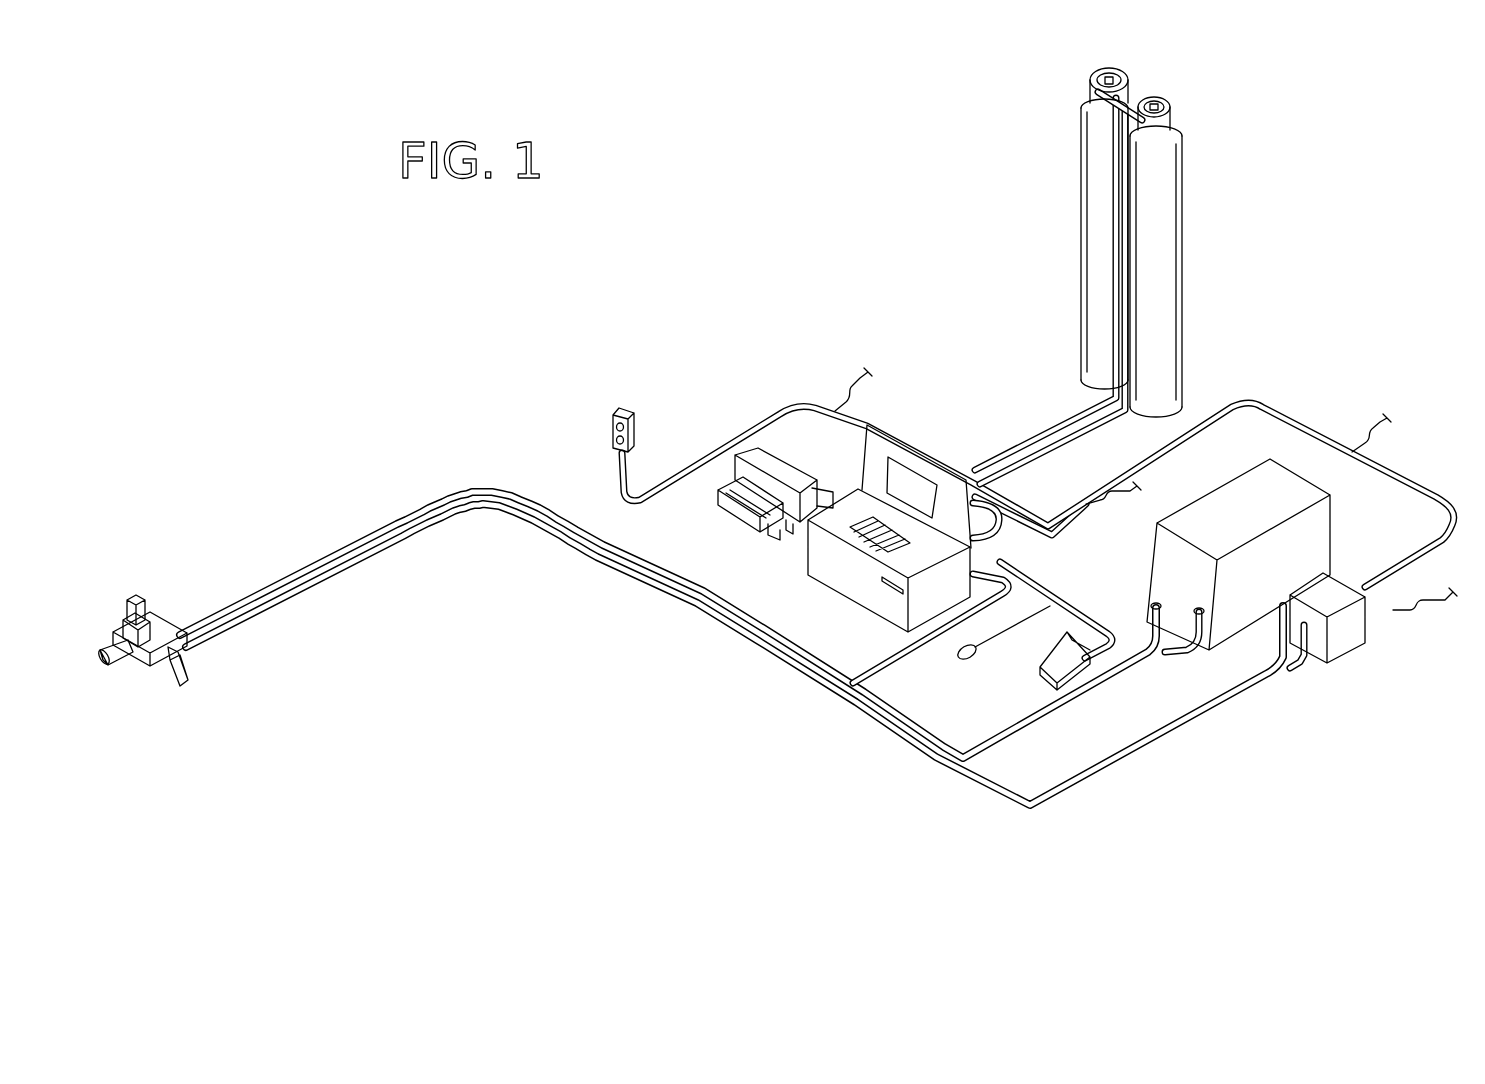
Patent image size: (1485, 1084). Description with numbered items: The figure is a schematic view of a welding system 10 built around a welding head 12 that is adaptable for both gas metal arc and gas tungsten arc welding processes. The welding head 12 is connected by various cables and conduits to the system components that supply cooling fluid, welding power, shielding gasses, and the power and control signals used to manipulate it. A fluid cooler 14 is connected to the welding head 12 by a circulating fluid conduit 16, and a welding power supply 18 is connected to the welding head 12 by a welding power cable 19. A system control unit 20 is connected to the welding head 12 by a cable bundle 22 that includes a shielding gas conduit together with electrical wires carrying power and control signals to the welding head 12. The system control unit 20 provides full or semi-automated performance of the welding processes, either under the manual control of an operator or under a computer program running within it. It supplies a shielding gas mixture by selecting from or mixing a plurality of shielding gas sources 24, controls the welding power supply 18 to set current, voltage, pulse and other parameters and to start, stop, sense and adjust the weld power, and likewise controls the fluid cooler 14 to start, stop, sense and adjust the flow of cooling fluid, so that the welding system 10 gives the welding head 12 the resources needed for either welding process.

The welding system 10 is at (895, 300).
The welding head 12 is at (146, 616).
The fluid cooler 14 is at (1358, 652).
The circulating fluid conduit 16 is at (1137, 744).
The welding power supply 18 is at (1243, 460).
The welding power cable 19 is at (990, 748).
The system control unit 20 is at (837, 593).
The cable bundle 22 is at (890, 667).
The shielding gas sources 24 is at (1130, 88).